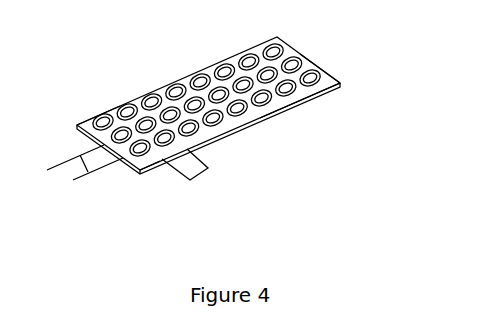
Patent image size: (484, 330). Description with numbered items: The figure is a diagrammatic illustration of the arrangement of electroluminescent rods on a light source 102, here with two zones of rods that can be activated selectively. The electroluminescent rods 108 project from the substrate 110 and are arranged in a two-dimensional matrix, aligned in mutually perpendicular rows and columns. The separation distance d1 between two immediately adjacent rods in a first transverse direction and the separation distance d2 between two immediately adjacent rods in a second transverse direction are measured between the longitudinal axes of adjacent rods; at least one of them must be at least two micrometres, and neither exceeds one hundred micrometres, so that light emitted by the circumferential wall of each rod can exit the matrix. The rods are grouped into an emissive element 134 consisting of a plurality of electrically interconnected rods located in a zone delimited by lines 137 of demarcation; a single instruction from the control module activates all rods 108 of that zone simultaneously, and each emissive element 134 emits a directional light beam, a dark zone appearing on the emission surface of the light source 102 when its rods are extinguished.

The light source 102 is at (160, 84).
The lines of demarcation 137 is at (189, 77).
The substrate 110 is at (83, 116).
The emissive element 134 is at (329, 59).
The electroluminescent rod 108 is at (291, 104).
The separation distance d1 is at (190, 171).
The separation distance d2 is at (85, 168).